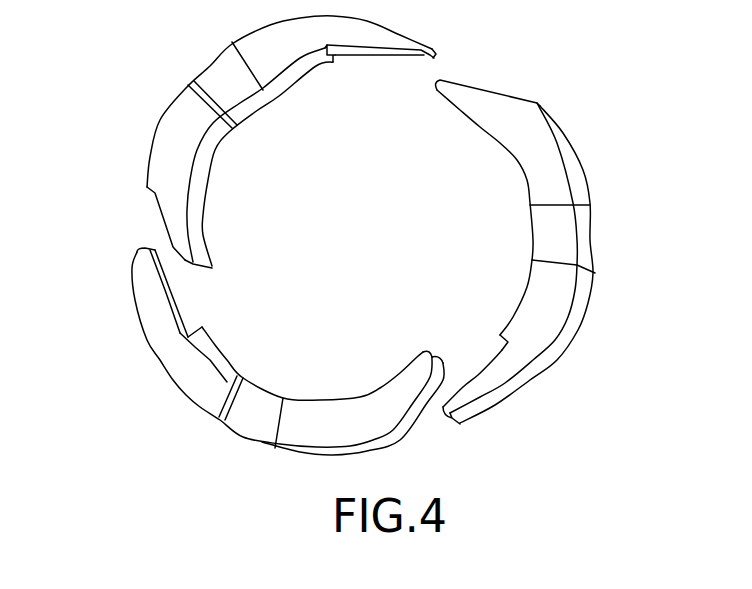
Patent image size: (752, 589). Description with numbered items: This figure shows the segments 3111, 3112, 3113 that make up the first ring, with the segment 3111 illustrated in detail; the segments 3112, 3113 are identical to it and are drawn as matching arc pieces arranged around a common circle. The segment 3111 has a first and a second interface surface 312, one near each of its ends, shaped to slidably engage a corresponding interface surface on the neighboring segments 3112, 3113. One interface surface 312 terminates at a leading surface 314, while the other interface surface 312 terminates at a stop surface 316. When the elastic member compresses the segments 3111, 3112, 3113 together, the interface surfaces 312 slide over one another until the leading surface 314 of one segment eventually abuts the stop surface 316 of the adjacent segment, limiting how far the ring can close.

The segment 3111 is at (160, 128).
The segment 3112 is at (558, 290).
The segment 3113 is at (155, 343).
The interface surface 312 is at (157, 213).
The leading surface 314 is at (208, 268).
The stop surface 316 is at (333, 62).